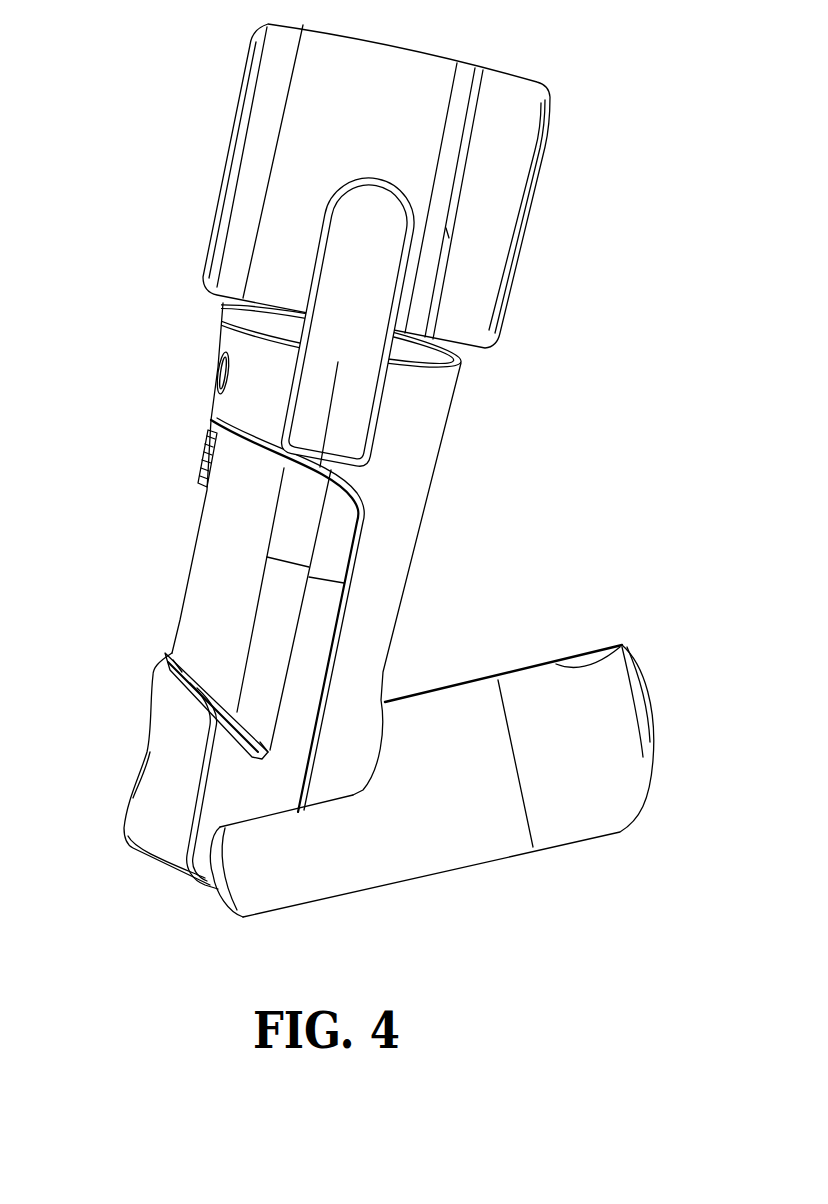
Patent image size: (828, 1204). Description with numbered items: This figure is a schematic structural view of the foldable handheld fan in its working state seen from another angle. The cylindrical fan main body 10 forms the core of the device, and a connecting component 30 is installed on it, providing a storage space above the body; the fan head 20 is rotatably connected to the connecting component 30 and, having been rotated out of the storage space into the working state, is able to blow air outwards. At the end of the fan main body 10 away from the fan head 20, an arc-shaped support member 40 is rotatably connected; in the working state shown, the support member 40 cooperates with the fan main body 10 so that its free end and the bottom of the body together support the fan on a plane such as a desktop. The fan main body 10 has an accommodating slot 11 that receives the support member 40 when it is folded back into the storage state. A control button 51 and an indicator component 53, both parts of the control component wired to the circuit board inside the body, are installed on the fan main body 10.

The fan main body 10 is at (370, 497).
The accommodating slot 11 is at (220, 595).
The fan head 20 is at (368, 124).
The connecting component 30 is at (350, 306).
The support member 40 is at (450, 833).
The control button 51 is at (198, 462).
The indicator component 53 is at (213, 375).